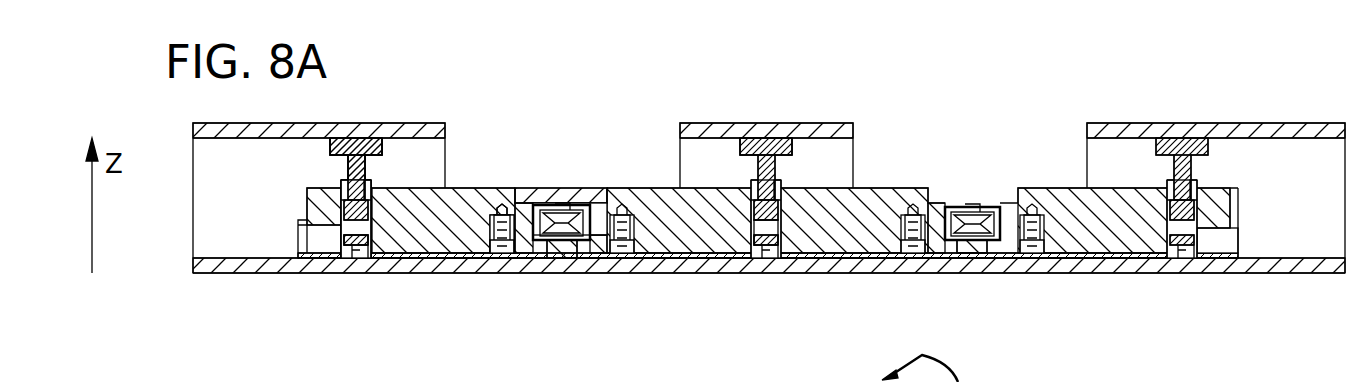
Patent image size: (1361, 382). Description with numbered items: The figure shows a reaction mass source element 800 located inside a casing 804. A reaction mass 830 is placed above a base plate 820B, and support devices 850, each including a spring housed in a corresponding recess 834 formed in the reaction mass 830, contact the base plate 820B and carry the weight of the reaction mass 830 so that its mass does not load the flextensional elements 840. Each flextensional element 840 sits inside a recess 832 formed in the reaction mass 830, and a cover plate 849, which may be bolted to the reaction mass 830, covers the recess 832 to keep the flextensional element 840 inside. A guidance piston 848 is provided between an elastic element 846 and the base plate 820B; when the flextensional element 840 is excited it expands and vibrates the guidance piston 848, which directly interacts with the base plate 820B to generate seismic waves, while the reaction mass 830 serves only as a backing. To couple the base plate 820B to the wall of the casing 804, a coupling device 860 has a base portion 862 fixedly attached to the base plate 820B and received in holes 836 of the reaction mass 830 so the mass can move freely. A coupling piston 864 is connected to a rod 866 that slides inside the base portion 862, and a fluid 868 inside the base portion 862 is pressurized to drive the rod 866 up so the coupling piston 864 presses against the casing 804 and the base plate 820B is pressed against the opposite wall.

The reaction mass source element 800 is at (810, 36).
The casing 804 is at (1278, 270).
The base plate 820B is at (1132, 258).
The reaction mass 830 is at (1060, 187).
The recess 832 is at (542, 208).
The recess 834 is at (500, 218).
The holes 836 is at (1165, 222).
The flextensional element 840 is at (960, 240).
The elastic element 846 is at (950, 208).
The guidance piston 848 is at (560, 253).
The cover plate 849 is at (562, 192).
The support device 850 is at (502, 253).
The coupling device 860 is at (378, 166).
The base portion 862 is at (338, 241).
The coupling piston 864 is at (762, 148).
The rod 866 is at (777, 168).
The fluid 868 is at (766, 228).